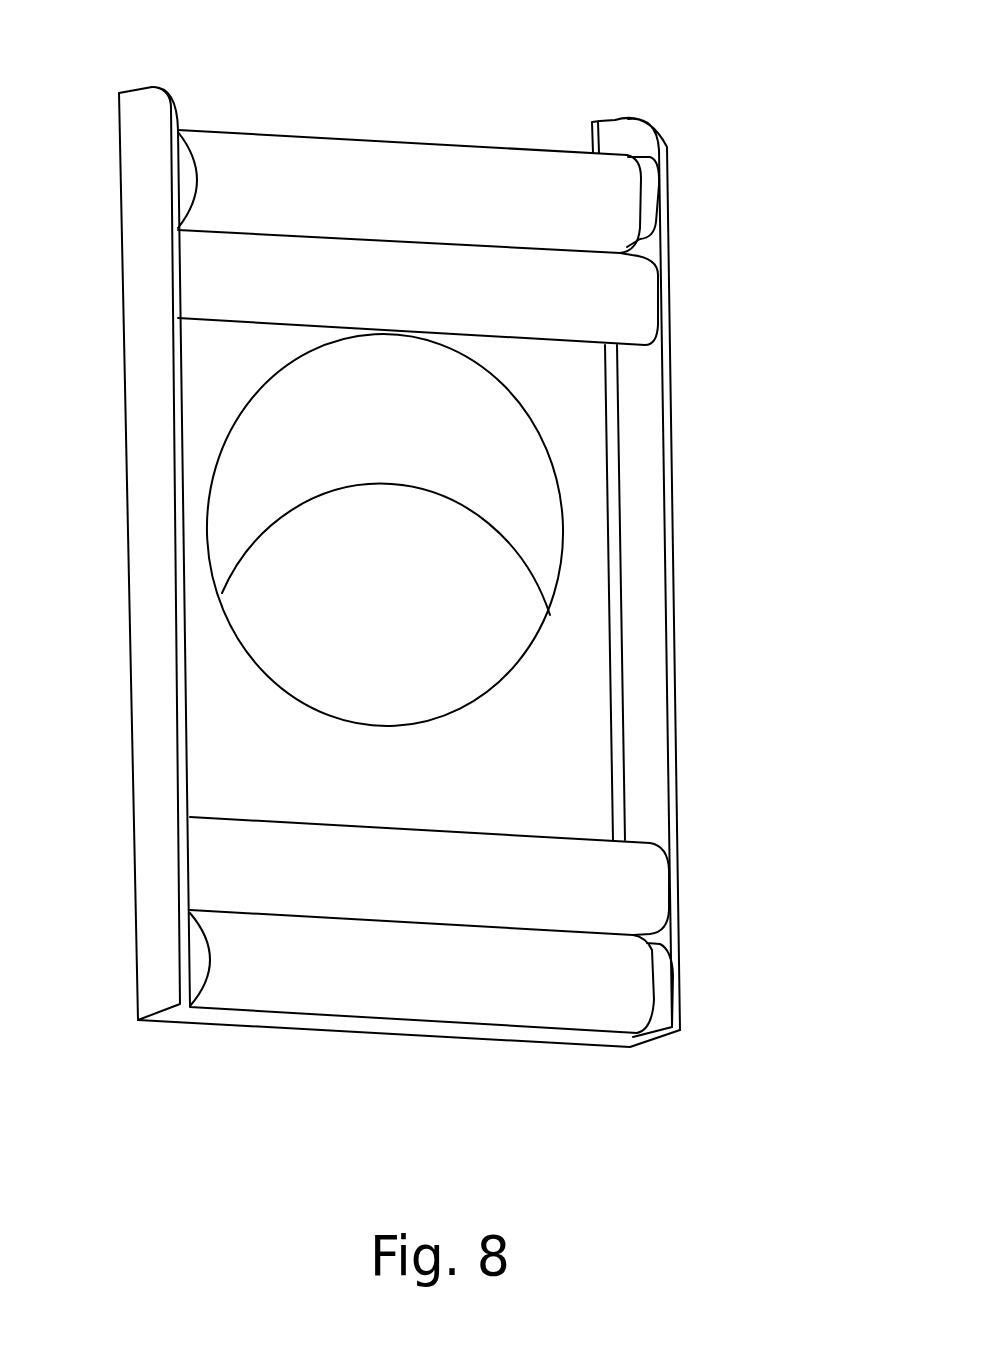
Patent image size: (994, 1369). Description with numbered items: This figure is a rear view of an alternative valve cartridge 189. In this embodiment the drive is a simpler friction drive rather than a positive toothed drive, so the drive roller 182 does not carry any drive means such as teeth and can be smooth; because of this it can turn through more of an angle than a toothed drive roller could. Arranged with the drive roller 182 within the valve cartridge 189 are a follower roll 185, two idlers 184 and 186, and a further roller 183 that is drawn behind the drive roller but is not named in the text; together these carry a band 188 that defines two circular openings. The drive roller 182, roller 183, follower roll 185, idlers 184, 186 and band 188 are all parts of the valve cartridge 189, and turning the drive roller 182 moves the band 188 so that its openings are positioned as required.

The valve cartridge 189 is at (702, 86).
The drive roller 182 is at (288, 133).
The upper rear roller 183 is at (645, 197).
The idler 184 is at (647, 292).
The follower roll 185 is at (660, 973).
The idler 186 is at (647, 878).
The band 188 is at (430, 802).